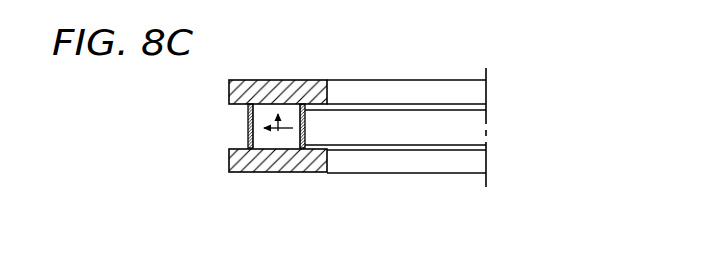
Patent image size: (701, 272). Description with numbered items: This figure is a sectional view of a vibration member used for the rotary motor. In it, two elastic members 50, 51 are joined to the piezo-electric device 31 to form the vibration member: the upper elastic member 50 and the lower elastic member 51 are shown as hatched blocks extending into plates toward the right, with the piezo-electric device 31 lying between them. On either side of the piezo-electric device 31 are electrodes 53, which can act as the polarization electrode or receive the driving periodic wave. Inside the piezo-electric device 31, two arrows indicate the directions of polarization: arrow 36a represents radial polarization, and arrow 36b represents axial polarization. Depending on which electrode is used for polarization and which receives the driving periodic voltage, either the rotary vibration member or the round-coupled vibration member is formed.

The elastic member 50 is at (281, 85).
The elastic member 51 is at (283, 168).
The electrode 53 is at (247, 143).
The piezo-electric device 31 is at (248, 130).
The direction of polarization 36a is at (287, 131).
The direction of polarization 36b is at (283, 132).